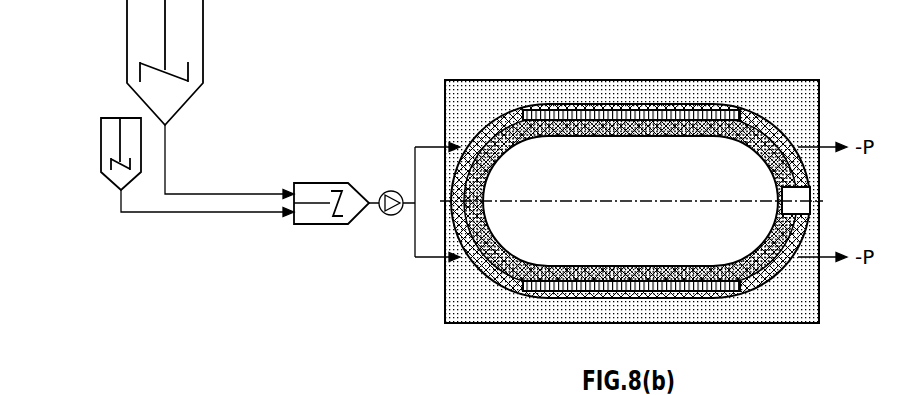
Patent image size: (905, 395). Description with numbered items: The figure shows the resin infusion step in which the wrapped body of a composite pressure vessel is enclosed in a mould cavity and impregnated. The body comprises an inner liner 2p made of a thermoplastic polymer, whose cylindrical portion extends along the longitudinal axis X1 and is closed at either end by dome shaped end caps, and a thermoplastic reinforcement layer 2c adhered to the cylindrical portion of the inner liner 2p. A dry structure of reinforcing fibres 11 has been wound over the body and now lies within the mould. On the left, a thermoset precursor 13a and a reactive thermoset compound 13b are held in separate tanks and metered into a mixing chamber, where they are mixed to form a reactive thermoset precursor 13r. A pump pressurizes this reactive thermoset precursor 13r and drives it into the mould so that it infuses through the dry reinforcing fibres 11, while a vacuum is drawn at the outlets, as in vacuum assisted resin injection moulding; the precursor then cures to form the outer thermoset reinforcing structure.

The reinforcing fibres 11 is at (753, 105).
The inner liner 2p is at (522, 108).
The thermoplastic reinforcement layer 2c is at (660, 113).
The reactive thermoset precursor 13r is at (378, 195).
The thermoset precursor 13a is at (195, 18).
The reactive thermoset compound 13b is at (113, 133).
The longitudinal axis X1 is at (499, 188).